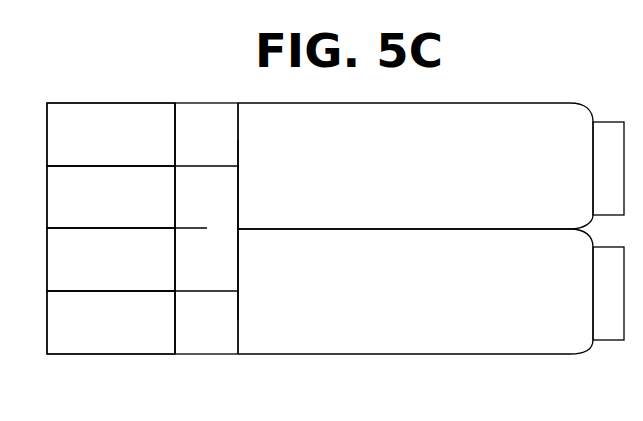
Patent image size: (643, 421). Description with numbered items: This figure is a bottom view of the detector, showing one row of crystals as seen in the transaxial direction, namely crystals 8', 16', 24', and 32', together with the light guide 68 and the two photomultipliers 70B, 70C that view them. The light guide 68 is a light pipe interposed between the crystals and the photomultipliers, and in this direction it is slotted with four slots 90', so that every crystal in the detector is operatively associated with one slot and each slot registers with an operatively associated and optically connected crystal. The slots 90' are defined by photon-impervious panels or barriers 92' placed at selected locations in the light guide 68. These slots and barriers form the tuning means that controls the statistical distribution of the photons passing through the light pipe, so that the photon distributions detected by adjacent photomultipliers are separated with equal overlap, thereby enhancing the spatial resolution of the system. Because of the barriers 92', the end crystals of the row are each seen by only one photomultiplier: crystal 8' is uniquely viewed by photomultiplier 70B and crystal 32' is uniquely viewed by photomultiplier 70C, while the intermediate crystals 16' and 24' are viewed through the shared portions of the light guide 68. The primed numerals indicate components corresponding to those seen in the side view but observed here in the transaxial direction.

The light guide 68 is at (208, 115).
The crystal 8' is at (111, 134).
The crystal 16' is at (111, 197).
The crystal 24' is at (111, 259).
The crystal 32' is at (111, 322).
The slots 90' is at (253, 230).
The barriers 92' is at (175, 245).
The photomultiplier 70B is at (397, 210).
The photomultiplier 70C is at (399, 335).